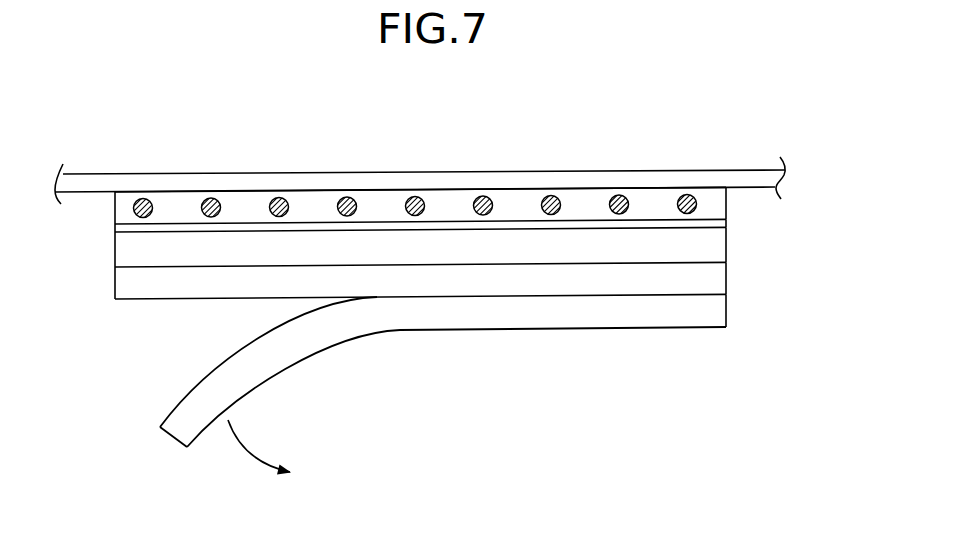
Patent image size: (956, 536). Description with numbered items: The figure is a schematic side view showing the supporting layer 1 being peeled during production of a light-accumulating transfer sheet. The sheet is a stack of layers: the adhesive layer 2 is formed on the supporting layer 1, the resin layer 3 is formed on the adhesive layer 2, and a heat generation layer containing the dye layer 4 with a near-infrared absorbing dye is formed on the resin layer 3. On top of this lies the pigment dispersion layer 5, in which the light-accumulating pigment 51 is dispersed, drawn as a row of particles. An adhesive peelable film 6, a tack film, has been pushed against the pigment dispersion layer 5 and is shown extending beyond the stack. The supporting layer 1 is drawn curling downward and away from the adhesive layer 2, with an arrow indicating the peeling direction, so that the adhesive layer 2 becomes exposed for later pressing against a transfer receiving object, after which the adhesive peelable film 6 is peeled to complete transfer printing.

The supporting layer 1 is at (280, 353).
The adhesive layer 2 is at (713, 275).
The resin layer 3 is at (712, 247).
The dye layer 4 is at (652, 225).
The pigment dispersion layer 5 is at (420, 156).
The light-accumulating pigment 51 is at (620, 200).
The adhesive peelable film 6 is at (318, 183).